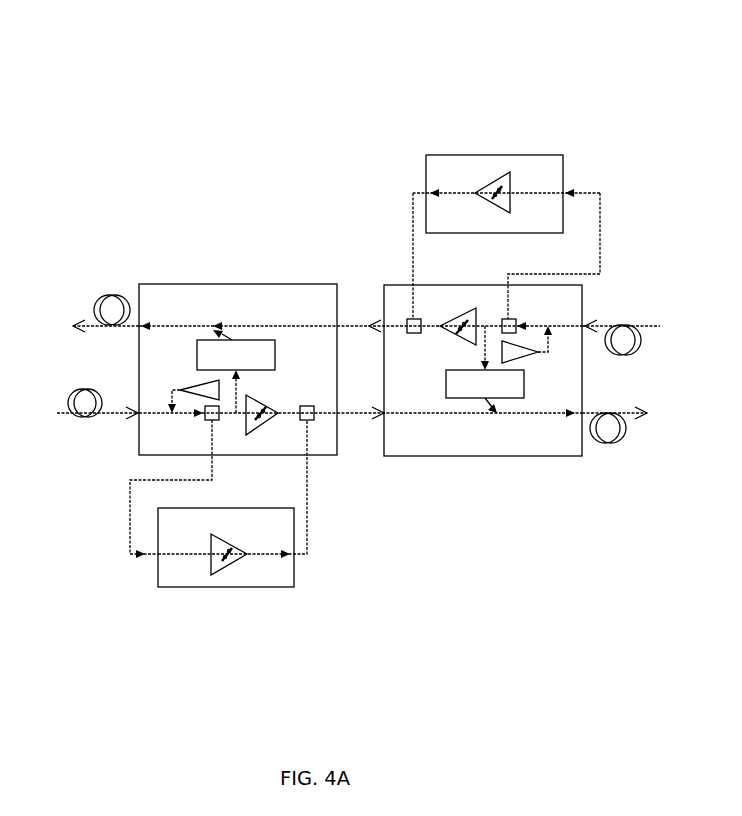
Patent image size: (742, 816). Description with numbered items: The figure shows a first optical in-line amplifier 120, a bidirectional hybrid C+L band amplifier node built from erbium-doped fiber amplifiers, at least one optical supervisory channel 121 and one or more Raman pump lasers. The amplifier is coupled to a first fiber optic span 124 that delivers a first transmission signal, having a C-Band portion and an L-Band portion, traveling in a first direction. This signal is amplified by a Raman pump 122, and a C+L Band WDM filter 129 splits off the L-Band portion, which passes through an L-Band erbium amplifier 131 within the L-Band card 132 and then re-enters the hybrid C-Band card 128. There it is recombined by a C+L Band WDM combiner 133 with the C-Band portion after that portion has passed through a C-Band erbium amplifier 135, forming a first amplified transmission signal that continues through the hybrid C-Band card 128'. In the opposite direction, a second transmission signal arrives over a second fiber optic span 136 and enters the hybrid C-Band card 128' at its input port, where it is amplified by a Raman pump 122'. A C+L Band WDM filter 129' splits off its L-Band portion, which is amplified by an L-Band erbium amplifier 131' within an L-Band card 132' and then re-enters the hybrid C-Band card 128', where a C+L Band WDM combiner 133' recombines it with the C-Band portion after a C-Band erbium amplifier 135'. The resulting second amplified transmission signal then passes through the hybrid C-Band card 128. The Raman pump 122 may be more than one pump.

The first optical in-line amplifier 120 is at (648, 63).
The optical supervisory channel 121 is at (360, 369).
The Raman pump 122 is at (572, 357).
The Raman pump 122' is at (146, 354).
The first fiber optic span 124 is at (623, 325).
The hybrid C-Band card 128 is at (483, 396).
The hybrid C-Band card 128' is at (238, 349).
The C+L Band WDM filter 129 is at (491, 290).
The C+L Band WDM filter 129' is at (147, 448).
The L-Band erbium amplifier 131 is at (503, 155).
The L-Band erbium amplifier 131' is at (223, 590).
The L-Band card 132 is at (460, 167).
The L-Band card 132' is at (261, 568).
The C+L Band WDM combiner 133 is at (388, 291).
The C+L Band WDM combiner 133' is at (330, 454).
The C-Band erbium amplifier 135 is at (446, 296).
The C-Band erbium amplifier 135' is at (262, 444).
The second fiber optic span 136 is at (635, 420).